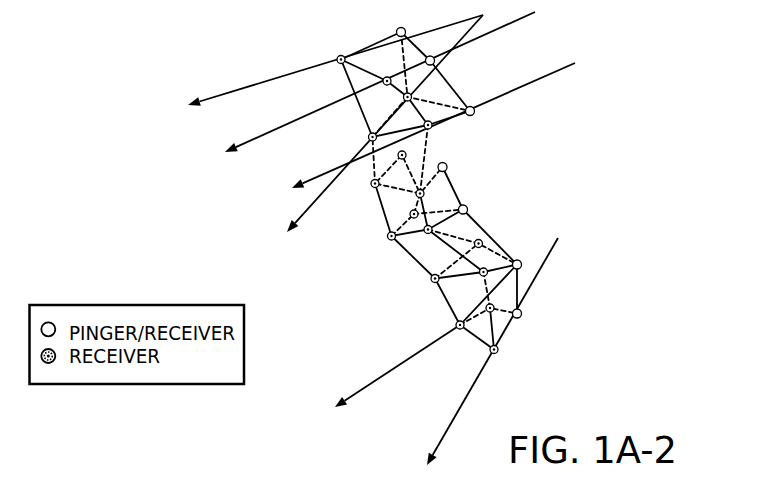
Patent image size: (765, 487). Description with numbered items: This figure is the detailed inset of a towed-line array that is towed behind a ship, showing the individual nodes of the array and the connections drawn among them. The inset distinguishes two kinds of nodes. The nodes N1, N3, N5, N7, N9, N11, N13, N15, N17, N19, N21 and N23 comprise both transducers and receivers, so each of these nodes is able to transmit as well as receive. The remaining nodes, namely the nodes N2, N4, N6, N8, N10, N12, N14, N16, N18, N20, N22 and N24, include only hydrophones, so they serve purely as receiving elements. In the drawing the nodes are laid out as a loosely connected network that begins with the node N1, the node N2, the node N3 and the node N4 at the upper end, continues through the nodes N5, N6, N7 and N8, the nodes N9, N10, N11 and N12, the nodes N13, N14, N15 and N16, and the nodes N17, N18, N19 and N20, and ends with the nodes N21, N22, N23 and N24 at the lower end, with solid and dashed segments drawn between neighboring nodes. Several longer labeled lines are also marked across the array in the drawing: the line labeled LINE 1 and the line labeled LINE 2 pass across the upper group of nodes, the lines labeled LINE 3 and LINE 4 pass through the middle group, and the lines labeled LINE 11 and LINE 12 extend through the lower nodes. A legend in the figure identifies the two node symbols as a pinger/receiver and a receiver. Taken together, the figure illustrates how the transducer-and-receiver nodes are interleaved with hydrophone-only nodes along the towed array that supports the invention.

The node N1 is at (331, 47).
The node N2 is at (401, 19).
The node N3 is at (379, 67).
The node N4 is at (439, 46).
The node N5 is at (358, 133).
The node N6 is at (412, 95).
The node N7 is at (442, 134).
The node N8 is at (483, 122).
The node N9 is at (362, 188).
The node N10 is at (398, 155).
The node N11 is at (424, 192).
The node N12 is at (462, 166).
The node N13 is at (373, 240).
The node N14 is at (410, 214).
The node N15 is at (427, 234).
The node N16 is at (483, 205).
The node N17 is at (418, 290).
The node N18 is at (480, 239).
The node N19 is at (470, 286).
The node N20 is at (528, 253).
The node N21 is at (441, 326).
The node N22 is at (493, 304).
The node N23 is at (509, 364).
The node N24 is at (533, 326).
The seismic line 1 LINE 1 is at (305, 67).
The seismic line 2 LINE 2 is at (349, 91).
The seismic line 3 LINE 3 is at (362, 136).
The seismic line 4 LINE 4 is at (401, 133).
The seismic line 11 LINE 11 is at (362, 373).
The seismic line 12 LINE 12 is at (457, 355).